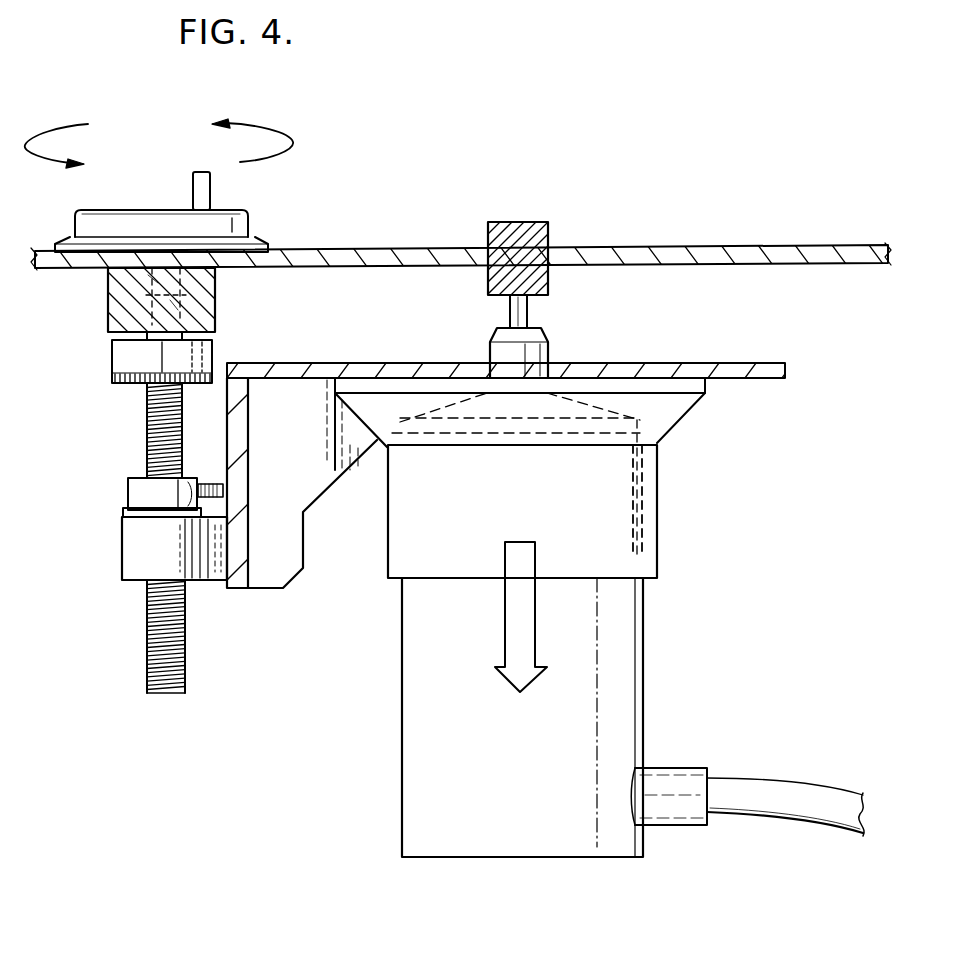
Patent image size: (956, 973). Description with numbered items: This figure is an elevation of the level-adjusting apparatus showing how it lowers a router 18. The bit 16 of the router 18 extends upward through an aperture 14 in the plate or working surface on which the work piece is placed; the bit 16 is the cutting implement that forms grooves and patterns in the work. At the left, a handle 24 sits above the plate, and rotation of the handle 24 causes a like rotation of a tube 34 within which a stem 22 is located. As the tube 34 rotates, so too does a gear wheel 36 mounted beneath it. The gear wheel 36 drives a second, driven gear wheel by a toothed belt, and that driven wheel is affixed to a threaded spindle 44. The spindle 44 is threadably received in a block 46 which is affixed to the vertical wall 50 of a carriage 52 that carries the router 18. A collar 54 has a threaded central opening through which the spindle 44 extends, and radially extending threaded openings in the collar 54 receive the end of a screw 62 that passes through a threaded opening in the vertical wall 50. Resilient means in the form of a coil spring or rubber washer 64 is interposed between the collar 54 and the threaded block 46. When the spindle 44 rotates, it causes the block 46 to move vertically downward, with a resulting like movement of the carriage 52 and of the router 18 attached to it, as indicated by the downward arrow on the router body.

The aperture 14 is at (554, 267).
The bit 16 is at (530, 222).
The router 18 is at (403, 722).
The stem 22 is at (220, 287).
The handle 24 is at (250, 215).
The tube 34 is at (108, 298).
The gear wheel 36 is at (114, 352).
The threaded spindle 44 is at (145, 405).
The block 46 is at (122, 538).
The vertical wall 50 is at (250, 414).
The carriage 52 is at (322, 362).
The collar 54 is at (130, 488).
The screw 62 is at (206, 484).
The rubber washer 64 is at (123, 510).